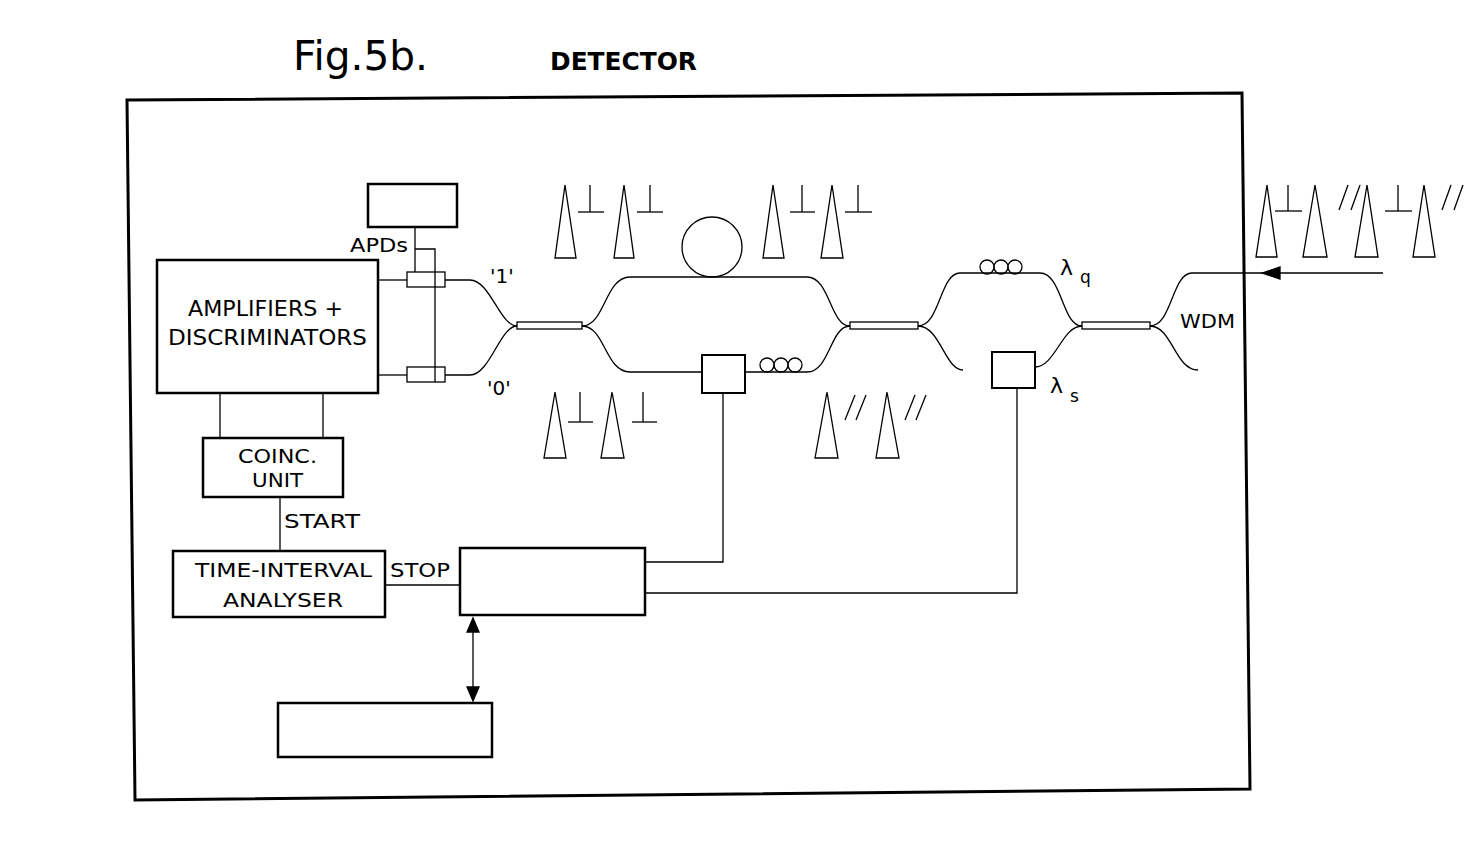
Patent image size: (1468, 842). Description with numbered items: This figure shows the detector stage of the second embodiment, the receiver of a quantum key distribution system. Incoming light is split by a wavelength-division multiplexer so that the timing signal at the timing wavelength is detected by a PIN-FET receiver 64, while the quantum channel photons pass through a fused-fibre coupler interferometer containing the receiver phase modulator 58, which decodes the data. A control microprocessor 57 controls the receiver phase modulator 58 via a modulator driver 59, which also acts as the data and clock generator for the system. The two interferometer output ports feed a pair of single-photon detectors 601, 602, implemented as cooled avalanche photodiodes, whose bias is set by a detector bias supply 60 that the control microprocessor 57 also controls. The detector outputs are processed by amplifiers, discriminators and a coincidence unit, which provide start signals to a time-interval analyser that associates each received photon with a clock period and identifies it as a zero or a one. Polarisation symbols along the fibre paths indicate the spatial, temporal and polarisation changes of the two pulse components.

The detector bias supply 60 is at (448, 183).
The single-photon detector 601 is at (444, 272).
The single-photon detector 602 is at (423, 382).
The receiver phase modulator 58 is at (746, 393).
The PIN-FET receiver 64 is at (1005, 388).
The modulator driver 59 is at (646, 617).
The control microprocessor 57 is at (493, 738).